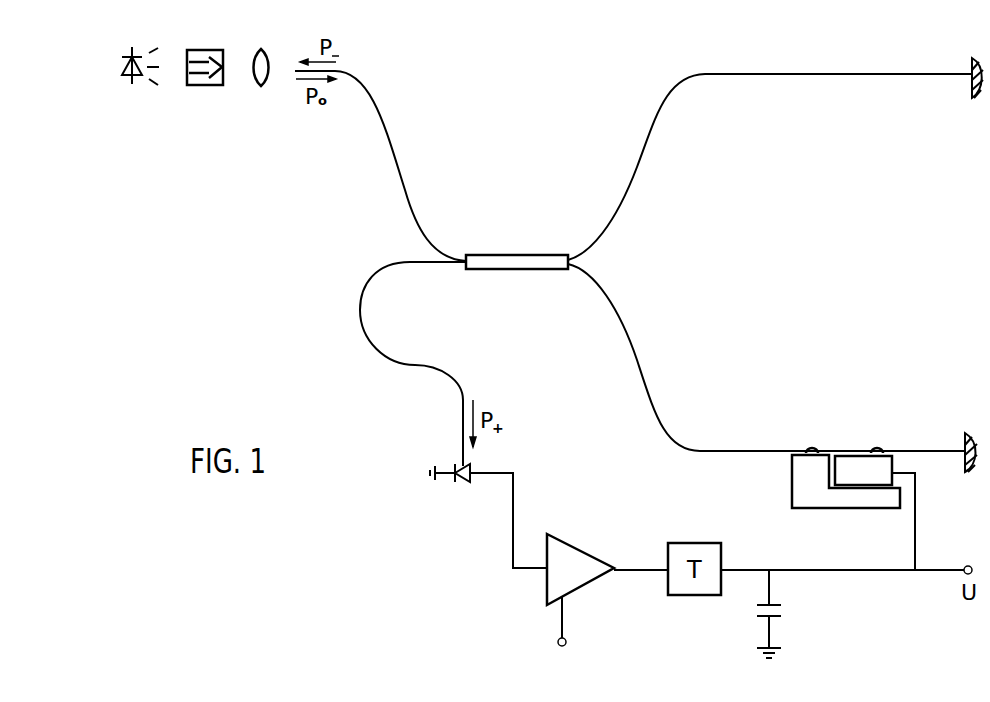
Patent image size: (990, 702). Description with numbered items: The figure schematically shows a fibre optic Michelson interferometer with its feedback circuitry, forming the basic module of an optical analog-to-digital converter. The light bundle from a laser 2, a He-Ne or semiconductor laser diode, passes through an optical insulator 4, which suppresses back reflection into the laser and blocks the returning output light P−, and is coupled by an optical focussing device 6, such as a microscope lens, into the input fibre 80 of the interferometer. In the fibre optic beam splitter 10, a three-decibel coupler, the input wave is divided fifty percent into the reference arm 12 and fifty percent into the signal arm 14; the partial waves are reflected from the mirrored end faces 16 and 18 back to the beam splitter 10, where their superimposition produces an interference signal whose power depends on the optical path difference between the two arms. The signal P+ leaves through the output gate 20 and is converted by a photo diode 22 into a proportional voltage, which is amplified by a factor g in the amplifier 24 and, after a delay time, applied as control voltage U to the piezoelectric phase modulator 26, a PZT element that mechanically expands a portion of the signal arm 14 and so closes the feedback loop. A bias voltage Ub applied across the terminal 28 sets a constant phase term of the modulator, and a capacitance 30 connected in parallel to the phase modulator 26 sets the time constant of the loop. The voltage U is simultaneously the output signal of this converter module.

The laser 2 is at (133, 85).
The optical insulator 4 is at (198, 85).
The optical focussing device 6 is at (259, 86).
The input optical fiber 80 is at (396, 110).
The fibre optic beam splitter 10 is at (505, 256).
The reference arm 12 is at (758, 75).
The signal arm 14 is at (745, 451).
The mirrored end face 16 is at (967, 84).
The mirrored end face 18 is at (963, 445).
The output gate 20 is at (462, 440).
The photo diode 22 is at (460, 485).
The amplifier 24 is at (590, 562).
The piezoelectric phase modulator 26 is at (856, 509).
The terminal 28 is at (558, 642).
The capacitance 30 is at (777, 632).